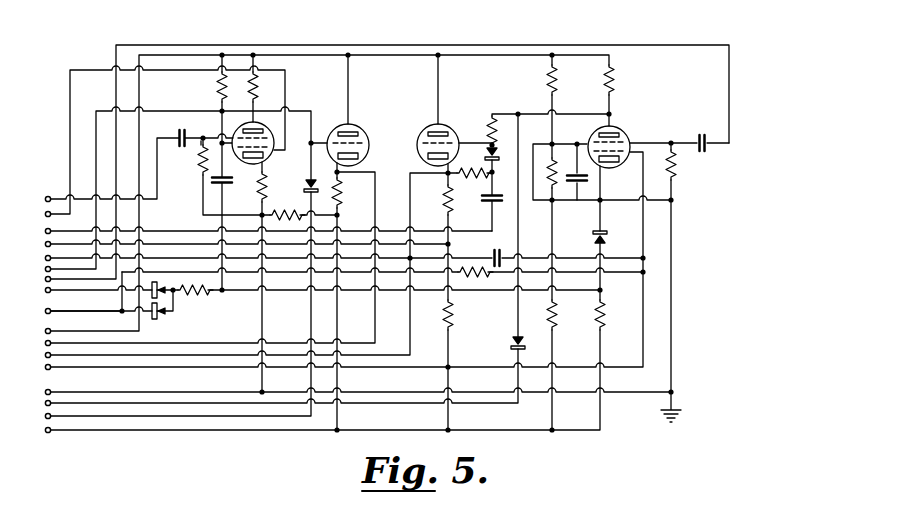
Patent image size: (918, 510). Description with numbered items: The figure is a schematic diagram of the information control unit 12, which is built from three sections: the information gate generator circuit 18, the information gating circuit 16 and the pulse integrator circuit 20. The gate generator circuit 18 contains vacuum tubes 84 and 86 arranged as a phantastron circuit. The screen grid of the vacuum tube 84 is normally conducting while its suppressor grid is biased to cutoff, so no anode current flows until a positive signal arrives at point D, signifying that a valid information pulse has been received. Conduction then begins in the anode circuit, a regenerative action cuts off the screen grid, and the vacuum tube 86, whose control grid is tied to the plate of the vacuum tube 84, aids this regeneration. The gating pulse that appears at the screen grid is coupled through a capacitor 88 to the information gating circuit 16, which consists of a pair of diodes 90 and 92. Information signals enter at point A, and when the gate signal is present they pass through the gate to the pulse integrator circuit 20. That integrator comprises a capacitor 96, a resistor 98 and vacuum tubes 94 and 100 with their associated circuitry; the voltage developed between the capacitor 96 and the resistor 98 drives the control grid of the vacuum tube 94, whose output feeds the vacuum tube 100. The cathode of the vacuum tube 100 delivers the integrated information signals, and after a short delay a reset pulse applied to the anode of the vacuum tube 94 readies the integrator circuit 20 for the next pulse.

The information control unit 12 is at (95, 27).
The information gating circuit 16 is at (118, 320).
The information gate generator circuit 18 is at (215, 45).
The pulse integrator circuit 20 is at (432, 45).
The vacuum tube 84 is at (271, 159).
The vacuum tube 86 is at (359, 127).
The capacitor 88 is at (229, 186).
The diode 90 is at (160, 281).
The diode 92 is at (160, 315).
The vacuum tube 94 is at (626, 135).
The capacitor 96 is at (494, 252).
The resistor 98 is at (486, 286).
The vacuum tube 100 is at (430, 125).
The point D is at (208, 139).
The point A is at (96, 289).